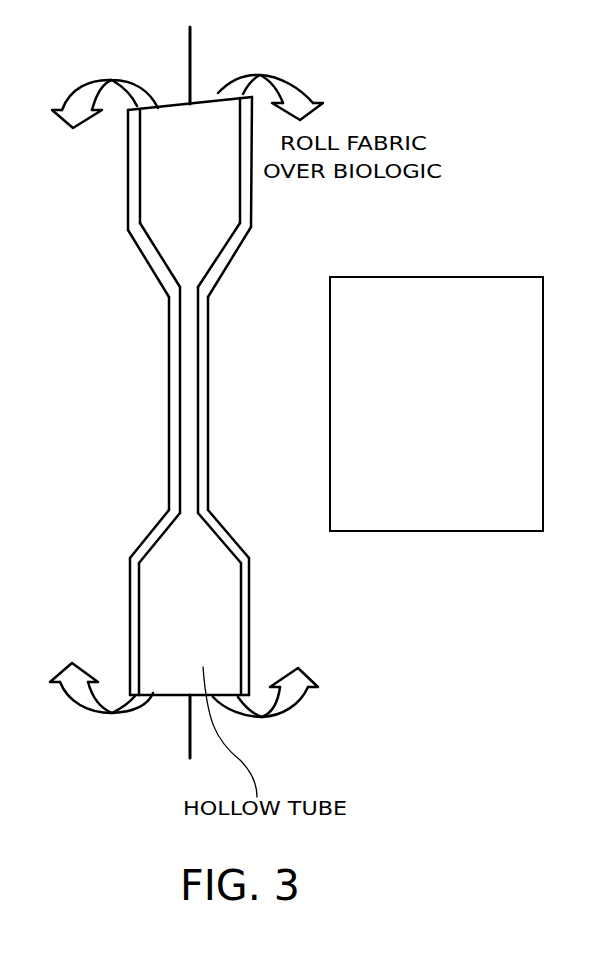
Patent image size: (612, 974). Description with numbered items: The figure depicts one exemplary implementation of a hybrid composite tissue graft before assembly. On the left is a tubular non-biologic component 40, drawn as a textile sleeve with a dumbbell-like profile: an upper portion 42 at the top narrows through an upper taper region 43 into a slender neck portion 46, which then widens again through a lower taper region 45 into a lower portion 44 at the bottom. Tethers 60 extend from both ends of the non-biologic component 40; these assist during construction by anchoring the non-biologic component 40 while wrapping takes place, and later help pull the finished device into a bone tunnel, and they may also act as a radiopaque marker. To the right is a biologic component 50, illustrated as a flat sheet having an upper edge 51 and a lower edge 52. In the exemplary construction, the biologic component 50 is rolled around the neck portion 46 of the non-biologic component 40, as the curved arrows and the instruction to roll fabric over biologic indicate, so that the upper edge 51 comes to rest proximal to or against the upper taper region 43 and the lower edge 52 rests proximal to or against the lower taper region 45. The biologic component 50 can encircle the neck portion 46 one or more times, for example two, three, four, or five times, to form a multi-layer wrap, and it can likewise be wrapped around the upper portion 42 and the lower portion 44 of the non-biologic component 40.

The tubular non-biologic component 40 is at (98, 438).
The upper portion 42 is at (172, 145).
The upper taper region 43 is at (150, 268).
The lower portion 44 is at (182, 608).
The lower taper region 45 is at (175, 548).
The neck portion 46 is at (168, 382).
The biologic component 50 is at (543, 383).
The upper edge 51 is at (423, 277).
The lower edge 52 is at (435, 531).
The tethers 60 is at (190, 63).